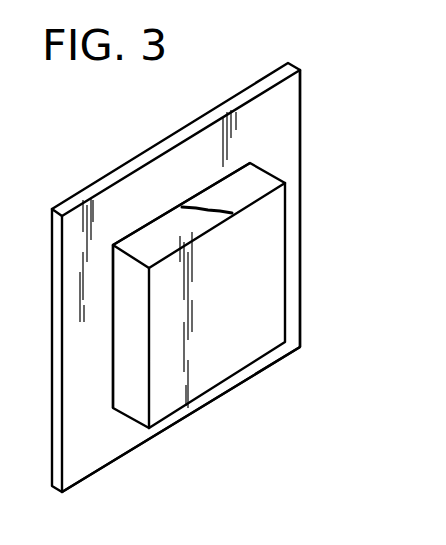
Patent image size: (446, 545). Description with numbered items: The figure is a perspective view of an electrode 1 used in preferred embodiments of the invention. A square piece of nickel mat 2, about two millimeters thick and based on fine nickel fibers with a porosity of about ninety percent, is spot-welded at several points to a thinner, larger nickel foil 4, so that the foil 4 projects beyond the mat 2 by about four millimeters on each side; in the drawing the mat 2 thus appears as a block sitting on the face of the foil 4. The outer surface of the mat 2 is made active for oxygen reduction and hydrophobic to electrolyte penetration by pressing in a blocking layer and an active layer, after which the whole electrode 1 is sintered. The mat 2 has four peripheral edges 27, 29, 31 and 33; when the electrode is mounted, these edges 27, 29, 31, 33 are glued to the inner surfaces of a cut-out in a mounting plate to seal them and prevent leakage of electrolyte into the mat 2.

The electrode 1 is at (322, 245).
The nickel mat 2 is at (270, 223).
The nickel foil 4 is at (291, 103).
The peripheral edge 27 is at (155, 233).
The peripheral edge 29 is at (125, 352).
The peripheral edge 31 is at (233, 378).
The peripheral edge 33 is at (285, 302).